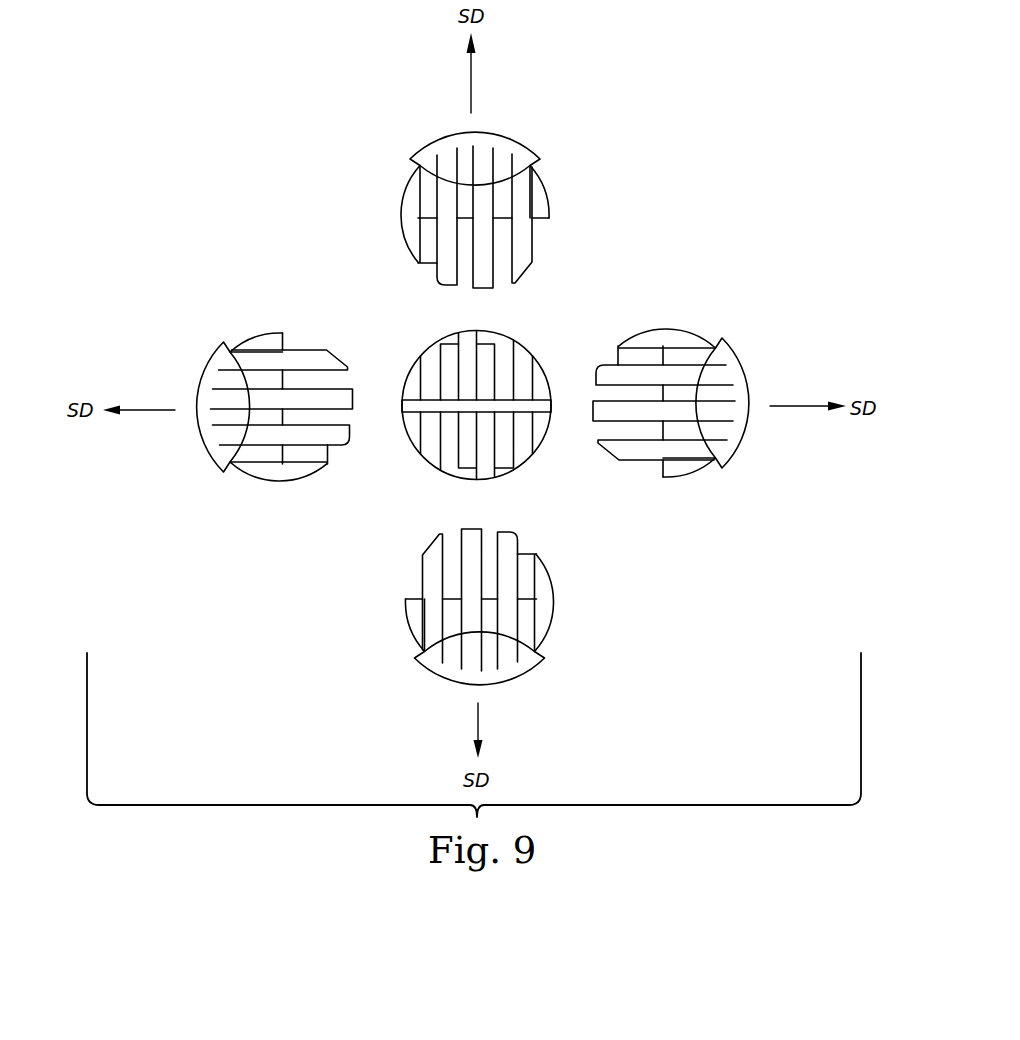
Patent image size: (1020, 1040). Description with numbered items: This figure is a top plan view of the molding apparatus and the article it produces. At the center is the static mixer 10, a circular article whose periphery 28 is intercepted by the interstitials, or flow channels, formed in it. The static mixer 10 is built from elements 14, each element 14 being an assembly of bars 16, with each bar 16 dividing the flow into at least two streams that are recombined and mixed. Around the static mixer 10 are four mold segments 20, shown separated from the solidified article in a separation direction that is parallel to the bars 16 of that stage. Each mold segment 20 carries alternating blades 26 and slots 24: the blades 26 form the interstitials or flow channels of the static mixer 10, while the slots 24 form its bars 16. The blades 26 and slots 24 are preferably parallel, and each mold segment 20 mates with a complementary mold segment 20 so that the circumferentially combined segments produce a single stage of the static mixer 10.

The static mixer 10 is at (394, 348).
The element 14 is at (502, 355).
The bar 16 is at (448, 458).
The mold segment 20 is at (380, 193).
The slot 24 is at (430, 270).
The blade 26 is at (452, 272).
The periphery 28 is at (467, 481).